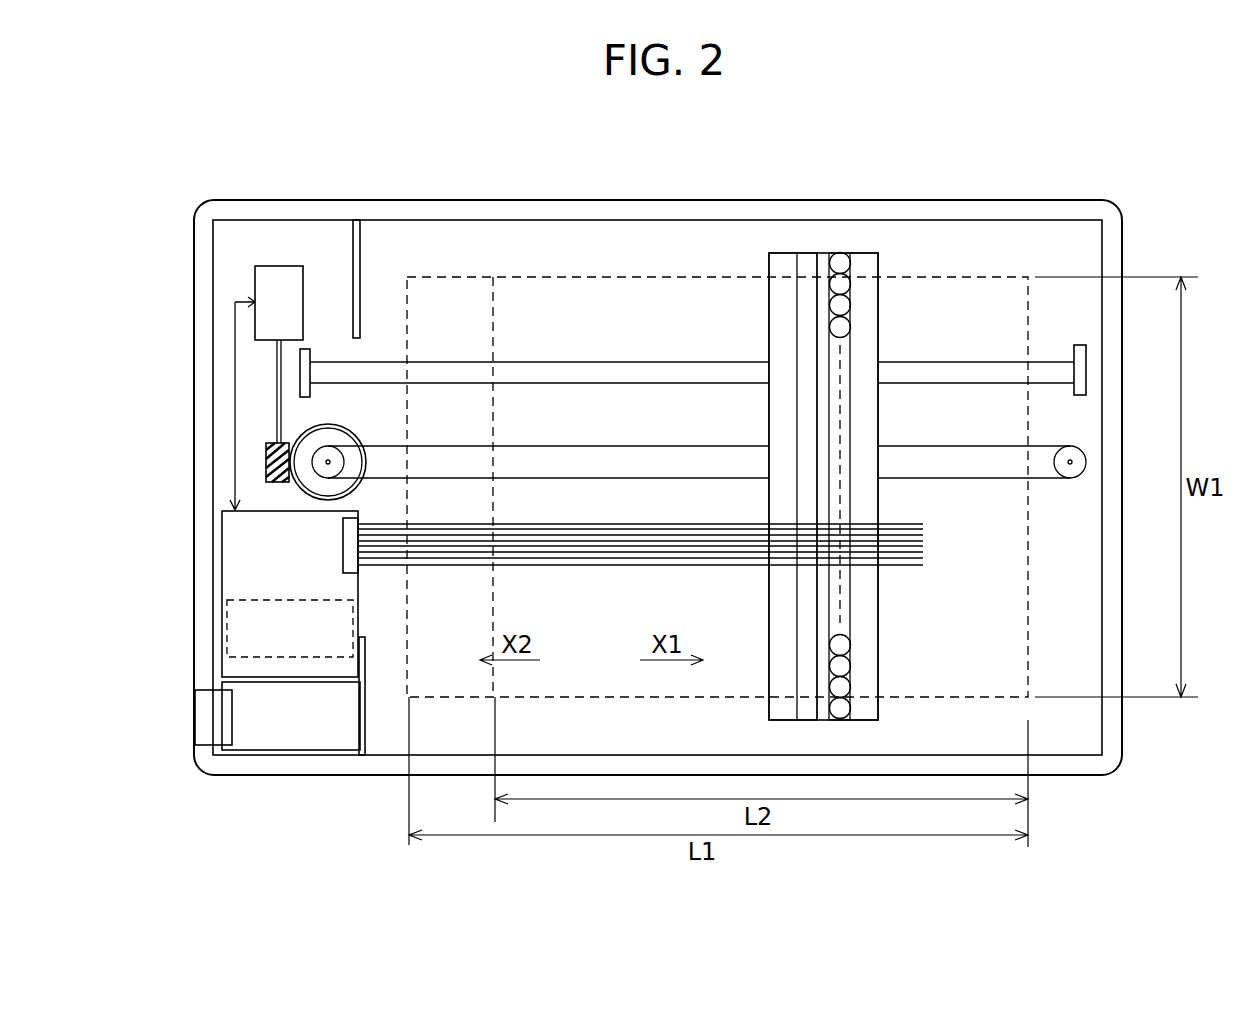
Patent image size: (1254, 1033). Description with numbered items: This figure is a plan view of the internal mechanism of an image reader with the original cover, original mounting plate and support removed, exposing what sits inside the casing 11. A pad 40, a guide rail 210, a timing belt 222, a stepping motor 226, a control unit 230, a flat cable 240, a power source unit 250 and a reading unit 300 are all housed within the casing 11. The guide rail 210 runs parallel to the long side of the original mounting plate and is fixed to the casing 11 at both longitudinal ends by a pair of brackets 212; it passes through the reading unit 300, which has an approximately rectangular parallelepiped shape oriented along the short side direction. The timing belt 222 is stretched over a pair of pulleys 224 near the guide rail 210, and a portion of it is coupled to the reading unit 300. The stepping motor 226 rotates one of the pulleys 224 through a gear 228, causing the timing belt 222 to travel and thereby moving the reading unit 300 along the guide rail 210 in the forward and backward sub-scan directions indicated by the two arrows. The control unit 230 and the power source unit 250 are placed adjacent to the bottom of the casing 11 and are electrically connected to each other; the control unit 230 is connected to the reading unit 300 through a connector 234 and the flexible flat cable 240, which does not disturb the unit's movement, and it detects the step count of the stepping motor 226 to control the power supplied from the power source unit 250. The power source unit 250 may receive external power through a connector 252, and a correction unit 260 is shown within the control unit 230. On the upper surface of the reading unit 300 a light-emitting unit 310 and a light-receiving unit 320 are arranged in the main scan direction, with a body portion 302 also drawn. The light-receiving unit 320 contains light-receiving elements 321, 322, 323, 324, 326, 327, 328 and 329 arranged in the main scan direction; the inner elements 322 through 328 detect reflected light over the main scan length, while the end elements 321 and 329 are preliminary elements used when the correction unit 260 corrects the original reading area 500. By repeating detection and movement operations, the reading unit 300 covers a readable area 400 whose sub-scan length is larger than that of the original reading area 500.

The casing 11 is at (1028, 200).
The pad 40 is at (362, 250).
The guide rail 210 is at (525, 362).
The bracket 212 is at (306, 349).
The timing belt 222 is at (612, 446).
The pulley 224 is at (330, 455).
The stepping motor 226 is at (283, 266).
The gear 228 is at (266, 448).
The control unit 230 is at (222, 534).
The connector 234 is at (358, 520).
The flat cable 240 is at (573, 565).
The power source unit 250 is at (295, 750).
The connector 252 is at (208, 714).
The correction unit 260 is at (251, 600).
The reading unit 300 is at (814, 435).
The carriage body 302 is at (769, 588).
The light-emitting unit 310 is at (800, 313).
The light-receiving unit 320 is at (850, 420).
The light-receiving element 321 is at (848, 263).
The light-receiving element 322 is at (848, 284).
The light-receiving element 323 is at (848, 305).
The light-receiving element 324 is at (848, 327).
The light-receiving element 326 is at (848, 645).
The light-receiving element 327 is at (848, 666).
The light-receiving element 328 is at (848, 687).
The light-receiving element 329 is at (848, 708).
The readable area 400 is at (407, 315).
The original reading area 500 is at (493, 315).